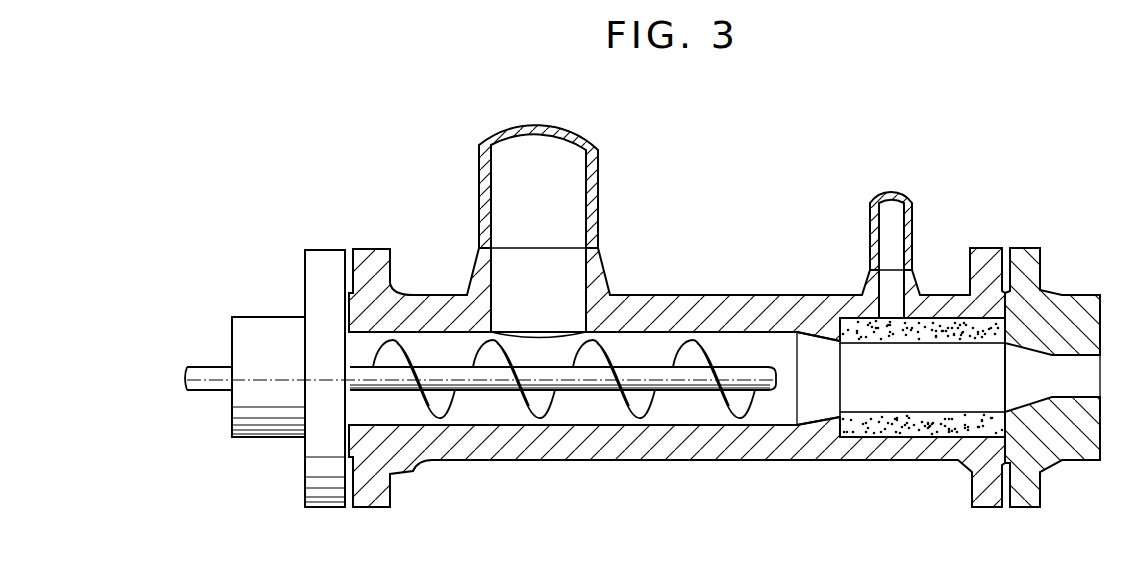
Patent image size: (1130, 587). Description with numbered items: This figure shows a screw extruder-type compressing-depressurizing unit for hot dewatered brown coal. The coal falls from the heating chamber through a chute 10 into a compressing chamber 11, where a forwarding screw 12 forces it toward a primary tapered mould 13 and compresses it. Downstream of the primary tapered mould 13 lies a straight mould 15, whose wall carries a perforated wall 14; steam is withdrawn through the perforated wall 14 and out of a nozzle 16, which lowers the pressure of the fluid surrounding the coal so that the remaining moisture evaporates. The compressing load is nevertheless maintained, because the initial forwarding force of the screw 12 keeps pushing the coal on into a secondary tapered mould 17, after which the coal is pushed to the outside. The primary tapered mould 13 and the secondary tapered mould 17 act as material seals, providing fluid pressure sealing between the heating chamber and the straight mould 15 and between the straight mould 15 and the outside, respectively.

The chute 10 is at (480, 200).
The compressing chamber 11 is at (495, 413).
The forwarding screw 12 is at (642, 352).
The primary tapered mould 13 is at (822, 423).
The perforated wall 14 is at (938, 322).
The straight mould 15 is at (956, 400).
The nozzle 16 is at (912, 224).
The secondary tapered mould 17 is at (1037, 458).